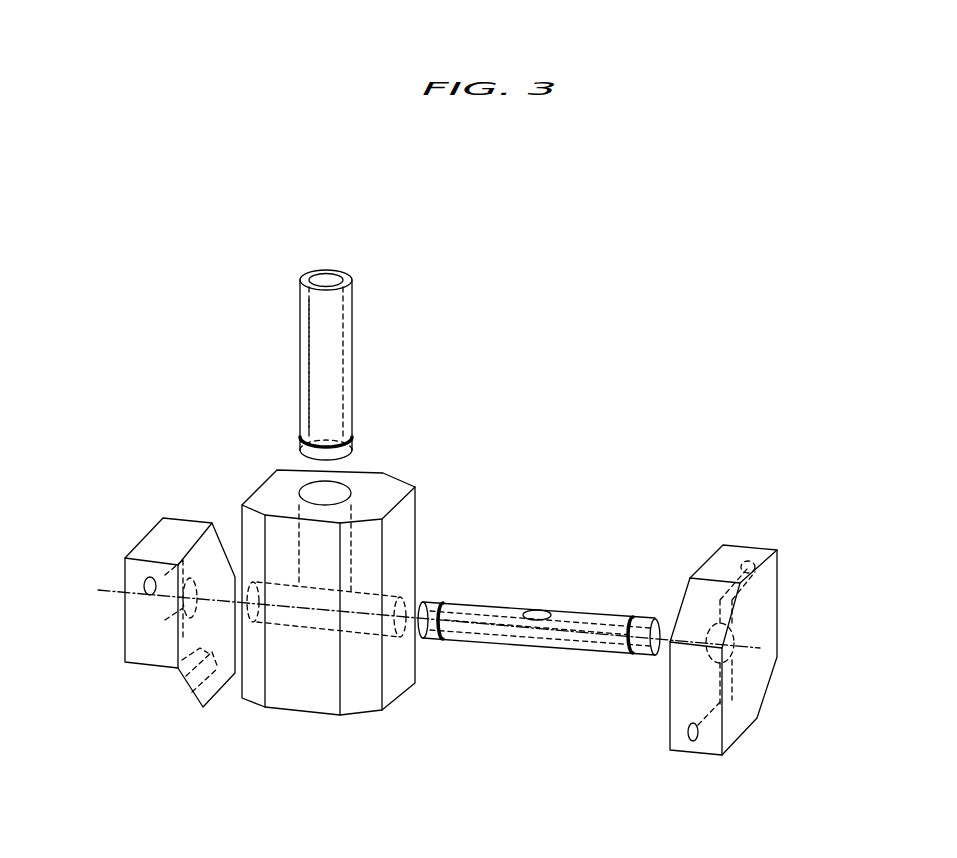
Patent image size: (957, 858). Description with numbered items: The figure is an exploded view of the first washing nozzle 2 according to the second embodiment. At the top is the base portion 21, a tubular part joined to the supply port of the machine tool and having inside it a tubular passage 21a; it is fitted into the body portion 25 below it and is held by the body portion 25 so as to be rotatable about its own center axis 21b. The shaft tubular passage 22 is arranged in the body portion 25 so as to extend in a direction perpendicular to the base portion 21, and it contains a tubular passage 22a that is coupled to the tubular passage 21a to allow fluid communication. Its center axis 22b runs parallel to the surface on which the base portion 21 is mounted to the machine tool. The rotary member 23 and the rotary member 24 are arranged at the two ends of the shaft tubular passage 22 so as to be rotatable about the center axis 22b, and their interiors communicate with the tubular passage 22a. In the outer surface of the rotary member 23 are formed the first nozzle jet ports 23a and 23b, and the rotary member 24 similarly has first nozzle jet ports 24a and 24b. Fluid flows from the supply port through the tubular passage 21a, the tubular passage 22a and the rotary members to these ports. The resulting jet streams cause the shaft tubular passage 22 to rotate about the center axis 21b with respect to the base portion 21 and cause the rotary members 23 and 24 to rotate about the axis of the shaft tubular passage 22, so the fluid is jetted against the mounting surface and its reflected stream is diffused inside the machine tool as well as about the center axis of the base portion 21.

The first washing nozzle 2 is at (532, 334).
The base portion 21 is at (353, 325).
The tubular passage 21a is at (340, 277).
The center axis 21b is at (323, 333).
The shaft tubular passage 22 is at (583, 612).
The tubular passage 22a is at (553, 650).
The center axis 22b is at (477, 618).
The rotary member 23 is at (737, 553).
The first nozzle jet port 23a is at (693, 730).
The first nozzle jet port 23b is at (752, 571).
The rotary member 24 is at (172, 528).
The first nozzle jet port 24a is at (155, 587).
The first nozzle jet port 24b is at (200, 660).
The body portion 25 is at (390, 478).